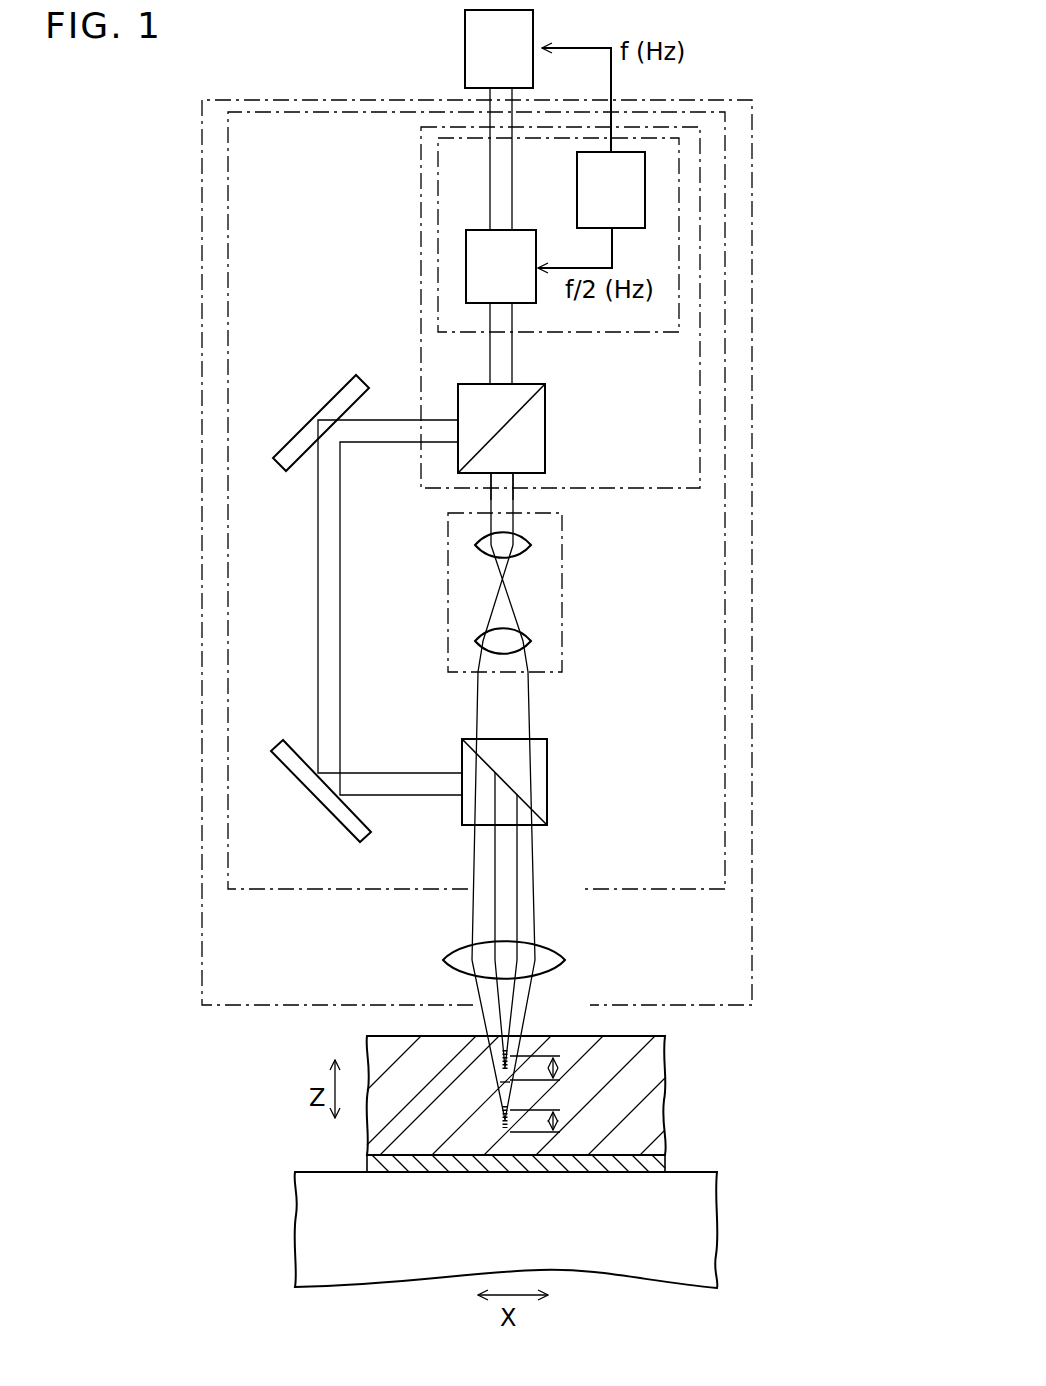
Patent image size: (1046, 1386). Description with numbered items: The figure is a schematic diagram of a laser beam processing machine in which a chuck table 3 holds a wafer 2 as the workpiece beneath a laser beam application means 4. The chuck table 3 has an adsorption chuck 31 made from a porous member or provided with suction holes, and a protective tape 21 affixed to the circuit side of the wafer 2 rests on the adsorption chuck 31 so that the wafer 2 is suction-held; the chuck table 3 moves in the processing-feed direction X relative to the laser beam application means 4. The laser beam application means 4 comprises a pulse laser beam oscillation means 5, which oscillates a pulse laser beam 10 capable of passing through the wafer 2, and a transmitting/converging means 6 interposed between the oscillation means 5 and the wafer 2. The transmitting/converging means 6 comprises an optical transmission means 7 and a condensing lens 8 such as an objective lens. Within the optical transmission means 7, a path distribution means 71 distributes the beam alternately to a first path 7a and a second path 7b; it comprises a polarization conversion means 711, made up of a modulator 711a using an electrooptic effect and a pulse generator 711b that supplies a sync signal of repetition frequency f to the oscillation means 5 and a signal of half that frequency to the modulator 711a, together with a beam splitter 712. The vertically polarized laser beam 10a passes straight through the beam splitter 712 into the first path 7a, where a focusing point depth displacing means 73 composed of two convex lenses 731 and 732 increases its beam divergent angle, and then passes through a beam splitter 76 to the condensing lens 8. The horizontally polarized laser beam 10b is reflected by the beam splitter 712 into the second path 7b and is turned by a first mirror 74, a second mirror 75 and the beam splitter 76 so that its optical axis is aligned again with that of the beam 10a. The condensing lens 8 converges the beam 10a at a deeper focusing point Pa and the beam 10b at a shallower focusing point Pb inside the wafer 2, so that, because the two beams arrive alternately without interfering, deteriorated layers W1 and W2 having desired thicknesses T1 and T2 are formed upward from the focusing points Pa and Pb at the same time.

The wafer 2 is at (672, 1065).
The chuck table 3 is at (290, 1218).
The laser beam application means 4 is at (782, 70).
The pulse laser beam oscillation means 5 is at (465, 45).
The transmitting/converging means 6 is at (752, 390).
The optical transmission means 7 is at (725, 327).
The first path 7a is at (530, 498).
The second path 7b is at (415, 405).
The condensing lens 8 is at (560, 952).
The pulse laser beam 10 is at (490, 173).
The vertically polarized laser beam 10a is at (490, 498).
The horizontally polarized laser beam 10b is at (372, 442).
The protective tape 21 is at (367, 1160).
The adsorption chuck 31 is at (693, 1172).
The path distribution means 71 is at (700, 192).
The focusing point depth displacing means 73 is at (562, 585).
The first mirror 74 is at (322, 412).
The second mirror 75 is at (320, 800).
The beam splitter 76 is at (547, 762).
The polarization conversion means 711 is at (679, 250).
The modulator 711a is at (466, 274).
The pulse generator 711b is at (577, 200).
The beam splitter 712 is at (545, 410).
The convex lens 731 is at (530, 542).
The convex lens 732 is at (530, 638).
The focusing point Pa is at (470, 1172).
The focusing point Pb is at (500, 1082).
The deteriorated layer W1 is at (500, 1117).
The deteriorated layer W2 is at (500, 1064).
The thickness T1 is at (555, 1122).
The thickness T2 is at (555, 1068).